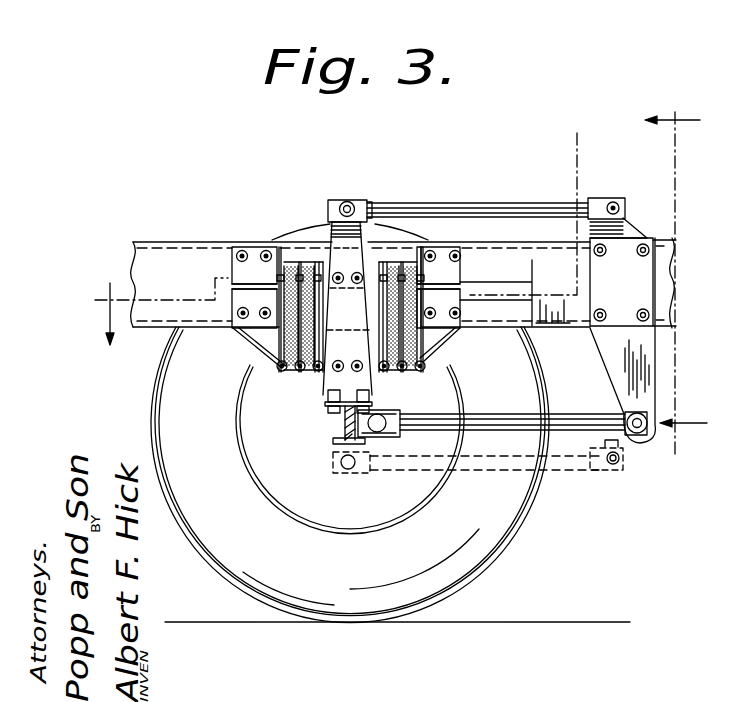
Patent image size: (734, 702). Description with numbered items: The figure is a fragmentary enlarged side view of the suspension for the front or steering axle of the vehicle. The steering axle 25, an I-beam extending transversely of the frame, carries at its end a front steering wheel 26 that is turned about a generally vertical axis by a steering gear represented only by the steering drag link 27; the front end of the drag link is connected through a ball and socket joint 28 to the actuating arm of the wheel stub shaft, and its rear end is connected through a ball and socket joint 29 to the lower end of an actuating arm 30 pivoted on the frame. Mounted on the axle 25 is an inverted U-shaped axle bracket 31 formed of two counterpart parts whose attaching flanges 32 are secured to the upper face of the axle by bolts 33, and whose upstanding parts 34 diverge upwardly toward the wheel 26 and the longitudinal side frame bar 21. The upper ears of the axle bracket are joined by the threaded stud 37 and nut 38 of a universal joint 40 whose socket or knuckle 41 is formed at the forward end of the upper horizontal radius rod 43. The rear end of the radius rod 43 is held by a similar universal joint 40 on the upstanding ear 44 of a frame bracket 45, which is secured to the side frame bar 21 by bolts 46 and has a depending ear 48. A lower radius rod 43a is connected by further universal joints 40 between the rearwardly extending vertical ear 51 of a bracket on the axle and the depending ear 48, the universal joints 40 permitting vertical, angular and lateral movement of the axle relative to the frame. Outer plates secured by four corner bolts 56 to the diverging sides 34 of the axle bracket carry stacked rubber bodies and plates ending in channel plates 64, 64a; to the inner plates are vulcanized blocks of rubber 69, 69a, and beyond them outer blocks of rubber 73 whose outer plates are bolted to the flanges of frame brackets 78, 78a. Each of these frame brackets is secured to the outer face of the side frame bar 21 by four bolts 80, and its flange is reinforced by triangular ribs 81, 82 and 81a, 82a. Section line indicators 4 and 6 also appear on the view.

The section line 4- 4 is at (676, 274).
The section line 6- 6 is at (324, 228).
The side frame bar 21 is at (143, 241).
The steering axle 25 is at (334, 444).
The front steering wheel 26 is at (470, 593).
The steering drag link 27 is at (563, 470).
The ball and socket joint 28 is at (355, 473).
The ball and socket joint 29 is at (614, 475).
The actuating arm 30 is at (620, 450).
The axle bracket 31 is at (316, 215).
The attaching flange 32 is at (326, 402).
The bolts 33 is at (344, 420).
The upstanding part 34 is at (347, 250).
The threaded stud 37 is at (347, 202).
The nut 38 is at (350, 205).
The universal joint 40 is at (360, 212).
The socket or knuckle 41 is at (370, 214).
The upper radius rod 43 is at (492, 203).
The lower radius rod 43a is at (516, 409).
The upstanding ear 44 is at (628, 215).
The frame bracket 45 is at (648, 291).
The bolts 46 is at (640, 308).
The depending ear 48 is at (650, 381).
The vertical ear 51 is at (388, 440).
The corner bolts 56 is at (356, 360).
The channel plate 64 is at (316, 374).
The channel plate 64a is at (385, 374).
The block of rubber 69 is at (278, 372).
The block of rubber 69a is at (424, 372).
The outer block of rubber 73 is at (292, 322).
The frame bracket 78 is at (232, 305).
The frame bracket 78a is at (468, 305).
The bolts 80 is at (240, 250).
The triangular rib 81 is at (247, 285).
The triangular rib 81a is at (462, 283).
The triangular rib 82 is at (238, 336).
The triangular rib 82a is at (455, 336).